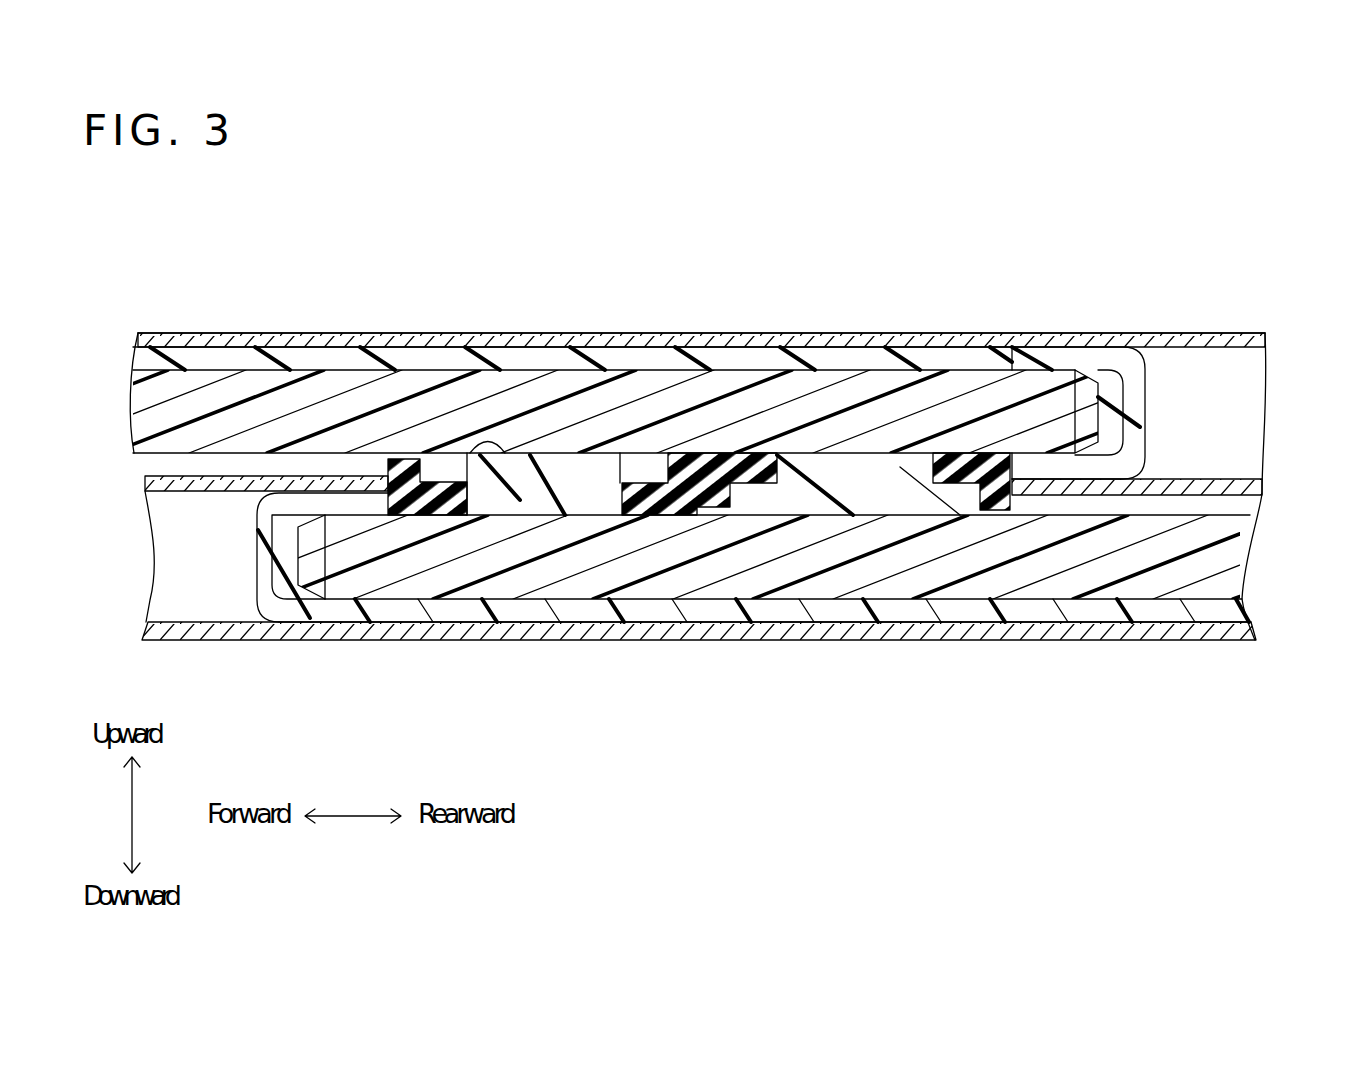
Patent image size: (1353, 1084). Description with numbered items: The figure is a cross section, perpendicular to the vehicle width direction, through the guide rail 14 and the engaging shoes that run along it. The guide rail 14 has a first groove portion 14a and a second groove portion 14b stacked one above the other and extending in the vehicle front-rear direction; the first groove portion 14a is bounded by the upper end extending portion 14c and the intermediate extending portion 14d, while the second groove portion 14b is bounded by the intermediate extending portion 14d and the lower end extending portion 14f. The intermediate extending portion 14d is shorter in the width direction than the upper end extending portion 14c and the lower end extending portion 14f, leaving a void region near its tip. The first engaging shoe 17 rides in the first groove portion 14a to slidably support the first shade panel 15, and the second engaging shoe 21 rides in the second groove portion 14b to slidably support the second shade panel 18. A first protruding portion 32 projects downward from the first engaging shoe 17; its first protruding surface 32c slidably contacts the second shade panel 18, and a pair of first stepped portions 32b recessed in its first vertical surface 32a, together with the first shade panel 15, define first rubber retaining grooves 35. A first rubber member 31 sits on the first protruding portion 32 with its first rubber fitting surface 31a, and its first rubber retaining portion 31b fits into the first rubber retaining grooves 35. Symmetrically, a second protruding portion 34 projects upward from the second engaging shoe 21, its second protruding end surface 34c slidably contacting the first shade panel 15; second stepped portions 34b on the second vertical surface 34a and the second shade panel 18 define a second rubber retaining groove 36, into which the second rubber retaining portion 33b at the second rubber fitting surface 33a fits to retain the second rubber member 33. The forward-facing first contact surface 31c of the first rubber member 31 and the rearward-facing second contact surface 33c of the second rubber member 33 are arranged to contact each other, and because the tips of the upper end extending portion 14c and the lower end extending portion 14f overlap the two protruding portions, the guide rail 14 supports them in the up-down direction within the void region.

The guide rail 14 is at (1170, 322).
The first groove portion 14a is at (1222, 418).
The second groove portion 14b is at (192, 570).
The upper end extending portion 14c is at (1252, 337).
The intermediate extending portion 14d is at (1222, 489).
The lower end extending portion 14f is at (1232, 640).
The first shade panel 15 is at (205, 395).
The first engaging shoe 17 is at (1123, 395).
The second shade panel 18 is at (1222, 556).
The second engaging shoe 21 is at (278, 580).
The first rubber member 31 is at (999, 518).
The first rubber fitting surface 31a is at (935, 520).
The first rubber retaining portion 31b is at (777, 470).
The first contact surface 31c is at (688, 480).
The first protruding portion 32 is at (862, 478).
The first vertical surface 32a is at (702, 465).
The first stepped portion 32b is at (965, 470).
The first protruding surface 32c is at (905, 470).
The second rubber member 33 is at (445, 500).
The second rubber fitting surface 33a is at (617, 455).
The second rubber retaining portion 33b is at (648, 520).
The second contact surface 33c is at (700, 520).
The second protruding portion 34 is at (565, 490).
The second vertical surface 34a is at (383, 455).
The second stepped portion 34b is at (640, 520).
The second protruding end surface 34c is at (500, 517).
The first rubber retaining groove 35 is at (737, 470).
The second rubber retaining groove 36 is at (394, 528).